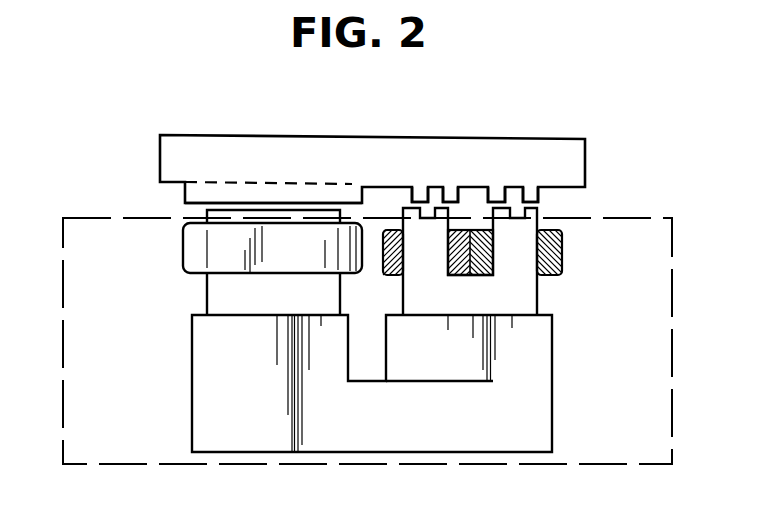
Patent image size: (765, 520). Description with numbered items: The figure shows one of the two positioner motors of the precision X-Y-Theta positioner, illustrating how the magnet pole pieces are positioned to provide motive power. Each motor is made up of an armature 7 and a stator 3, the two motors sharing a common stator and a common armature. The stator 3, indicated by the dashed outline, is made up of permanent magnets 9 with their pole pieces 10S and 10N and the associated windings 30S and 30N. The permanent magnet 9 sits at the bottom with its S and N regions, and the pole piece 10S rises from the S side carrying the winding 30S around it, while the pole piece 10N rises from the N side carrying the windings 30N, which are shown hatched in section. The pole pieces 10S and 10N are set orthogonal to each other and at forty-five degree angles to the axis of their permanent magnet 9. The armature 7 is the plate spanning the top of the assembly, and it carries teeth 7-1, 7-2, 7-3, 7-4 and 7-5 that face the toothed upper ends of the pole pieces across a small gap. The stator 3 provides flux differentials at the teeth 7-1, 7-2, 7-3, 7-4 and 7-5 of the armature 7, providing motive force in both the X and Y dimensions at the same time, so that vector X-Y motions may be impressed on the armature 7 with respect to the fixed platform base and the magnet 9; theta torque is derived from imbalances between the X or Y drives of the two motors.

The stator 3 is at (95, 218).
The armature 7 is at (585, 167).
The tooth 7-1 is at (418, 197).
The tooth 7-2 is at (450, 197).
The tooth 7-3 is at (497, 197).
The tooth 7-4 is at (532, 197).
The tooth 7-5 is at (255, 183).
The permanent magnet 9 is at (192, 392).
The pole piece 10S is at (207, 292).
The pole piece 10N is at (537, 290).
The winding 30S is at (183, 248).
The winding 30N is at (465, 243).